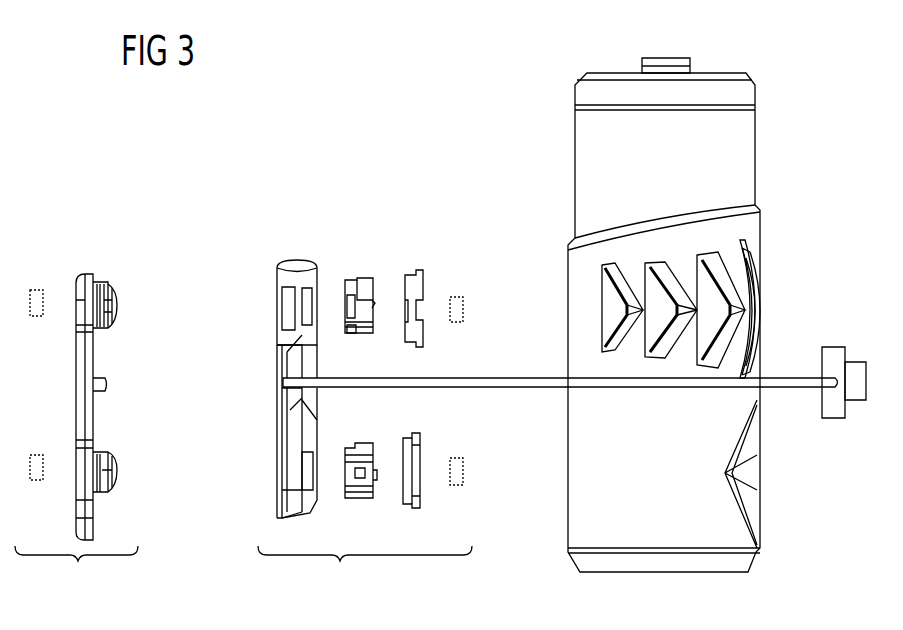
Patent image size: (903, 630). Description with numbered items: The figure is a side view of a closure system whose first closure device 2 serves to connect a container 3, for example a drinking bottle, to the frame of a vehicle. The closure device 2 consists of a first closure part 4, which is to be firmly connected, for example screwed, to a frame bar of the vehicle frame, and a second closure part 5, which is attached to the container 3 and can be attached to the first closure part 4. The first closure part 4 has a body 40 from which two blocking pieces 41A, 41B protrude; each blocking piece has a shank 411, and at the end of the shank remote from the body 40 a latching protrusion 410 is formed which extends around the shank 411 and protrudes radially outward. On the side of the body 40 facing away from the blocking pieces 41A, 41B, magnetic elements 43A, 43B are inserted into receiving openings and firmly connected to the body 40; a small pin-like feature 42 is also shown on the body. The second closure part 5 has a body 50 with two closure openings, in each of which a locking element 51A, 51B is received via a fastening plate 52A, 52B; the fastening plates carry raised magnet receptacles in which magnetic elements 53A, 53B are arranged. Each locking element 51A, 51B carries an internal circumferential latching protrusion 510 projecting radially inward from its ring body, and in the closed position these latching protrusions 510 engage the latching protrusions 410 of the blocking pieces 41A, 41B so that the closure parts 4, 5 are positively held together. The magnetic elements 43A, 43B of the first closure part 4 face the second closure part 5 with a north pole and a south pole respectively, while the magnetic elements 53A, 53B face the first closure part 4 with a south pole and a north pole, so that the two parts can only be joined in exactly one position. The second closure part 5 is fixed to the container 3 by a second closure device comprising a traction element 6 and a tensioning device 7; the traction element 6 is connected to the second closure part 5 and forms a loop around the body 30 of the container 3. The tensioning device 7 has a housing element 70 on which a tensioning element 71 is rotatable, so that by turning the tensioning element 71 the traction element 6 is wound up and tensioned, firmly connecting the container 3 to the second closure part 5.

The first closure device 2 is at (339, 173).
The container 3 is at (745, 170).
The first closure part 4 is at (78, 563).
The second closure part 5 is at (339, 563).
The traction element 6 is at (797, 378).
The tensioning device 7 is at (839, 435).
The body of the container 30 is at (752, 394).
The body of the first closure part 40 is at (82, 265).
The blocking piece 41A is at (110, 284).
The blocking piece 41B is at (114, 455).
The pin 42 is at (108, 385).
The magnetic element 43A is at (36, 317).
The magnetic element 43B is at (36, 481).
The body of the second closure part 50 is at (298, 262).
The locking element 51A is at (365, 280).
The locking element 51B is at (364, 443).
The fastening plate 52A is at (418, 270).
The fastening plate 52B is at (416, 433).
The magnetic element 53A is at (457, 297).
The magnetic element 53B is at (457, 458).
The housing element 70 is at (832, 352).
The tensioning element 71 is at (858, 372).
The latching protrusion 410 is at (112, 326).
The shank 411 is at (104, 283).
The latching protrusion 510 is at (346, 322).